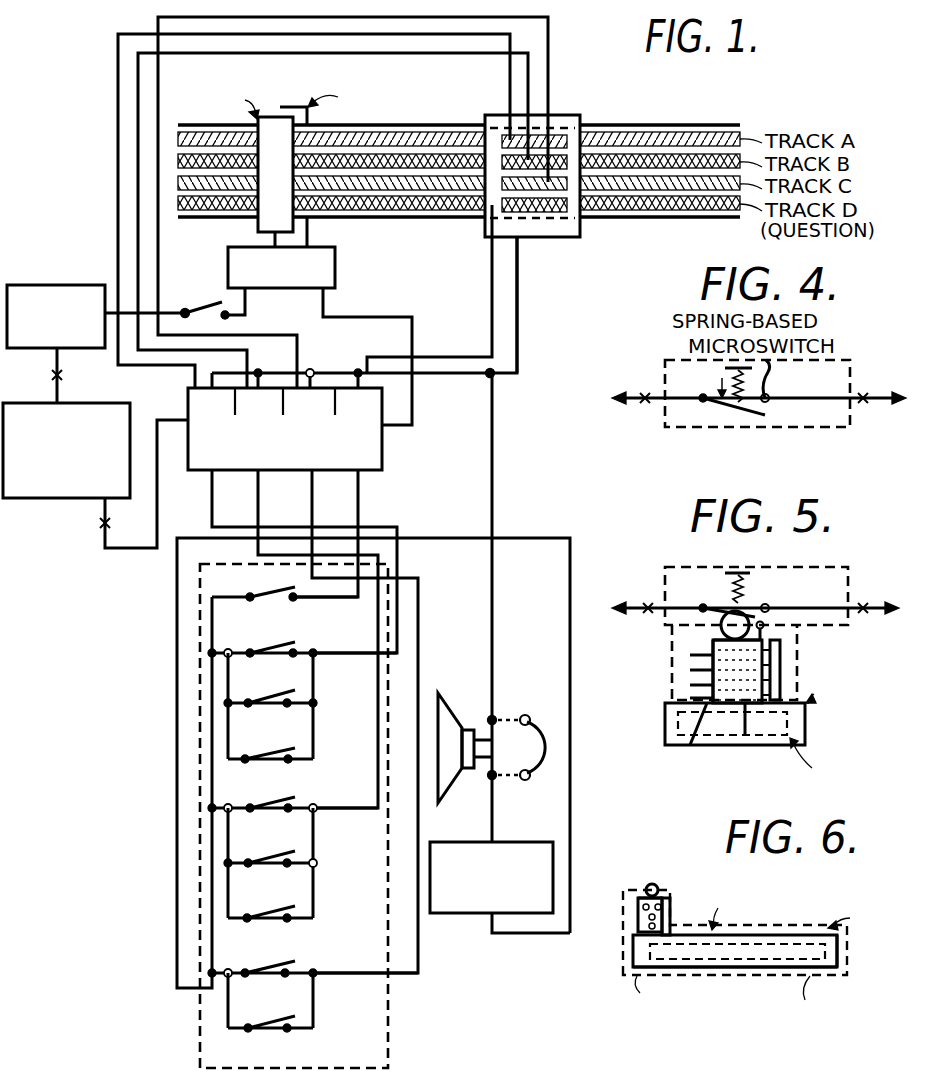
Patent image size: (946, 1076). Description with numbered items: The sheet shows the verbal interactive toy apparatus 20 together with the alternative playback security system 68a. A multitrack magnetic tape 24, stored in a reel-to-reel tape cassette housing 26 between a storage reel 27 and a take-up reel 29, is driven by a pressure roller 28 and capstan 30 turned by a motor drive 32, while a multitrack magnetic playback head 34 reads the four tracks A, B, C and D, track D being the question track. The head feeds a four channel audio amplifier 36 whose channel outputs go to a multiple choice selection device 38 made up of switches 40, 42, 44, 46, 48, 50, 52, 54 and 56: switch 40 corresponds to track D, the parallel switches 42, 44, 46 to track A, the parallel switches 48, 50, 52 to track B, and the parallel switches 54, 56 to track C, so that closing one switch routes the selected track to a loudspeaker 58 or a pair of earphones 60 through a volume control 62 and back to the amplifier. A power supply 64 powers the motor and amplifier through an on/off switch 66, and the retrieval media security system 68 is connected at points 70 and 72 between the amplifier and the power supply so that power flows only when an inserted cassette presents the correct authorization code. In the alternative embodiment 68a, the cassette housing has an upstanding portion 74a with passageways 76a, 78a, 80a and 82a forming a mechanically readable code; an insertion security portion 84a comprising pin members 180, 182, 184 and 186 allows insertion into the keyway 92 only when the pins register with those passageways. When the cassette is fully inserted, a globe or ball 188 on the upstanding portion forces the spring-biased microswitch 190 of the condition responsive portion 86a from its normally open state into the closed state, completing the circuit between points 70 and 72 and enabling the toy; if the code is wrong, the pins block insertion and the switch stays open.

In FIG. 1, the verbal interactive toy apparatus 20 is at (528, 365).
In FIG. 1, the multitrack magnetic tape 24 is at (612, 224).
In FIG. 6, the multitrack magnetic tape 24 is at (757, 934).
In FIG. 5, the reel-to-reel tape cassette housing 26 is at (818, 728).
In FIG. 6, the reel-to-reel tape cassette housing 26 is at (846, 945).
In FIG. 5, the storage reel 27 is at (745, 735).
In FIG. 6, the storage reel 27 is at (690, 976).
In FIG. 1, the pressure roller 28 is at (266, 117).
In FIG. 6, the take-up reel 29 is at (845, 960).
In FIG. 1, the capstan 30 is at (310, 113).
In FIG. 1, the motor drive 32 is at (337, 262).
In FIG. 1, the multitrack magnetic playback head 34 is at (580, 117).
In FIG. 1, the four channel audio amplifier 36 is at (384, 439).
In FIG. 1, the multiple choice selection device 38 is at (388, 993).
In FIG. 1, the switch 40 is at (303, 588).
In FIG. 1, the switch 42 is at (298, 640).
In FIG. 1, the switch 44 is at (300, 688).
In FIG. 1, the switch 46 is at (300, 746).
In FIG. 1, the switch 48 is at (296, 806).
In FIG. 1, the switch 50 is at (300, 838).
In FIG. 1, the switch 52 is at (296, 908).
In FIG. 1, the switch 54 is at (294, 965).
In FIG. 1, the switch 56 is at (300, 1010).
In FIG. 1, the loudspeaker 58 is at (453, 708).
In FIG. 1, the pair of earphones 60 is at (555, 748).
In FIG. 1, the volume control 62 is at (527, 842).
In FIG. 1, the power supply 64 is at (58, 285).
In FIG. 1, the on/off switch 66 is at (204, 283).
In FIG. 1, the playback security apparatus or retrieval media security system 68 is at (22, 499).
In FIG. 5, the playback security system 68a is at (818, 636).
In FIG. 1, the point 70 is at (62, 375).
In FIG. 4, the point 70 is at (643, 405).
In FIG. 5, the point 70 is at (648, 615).
In FIG. 1, the point 72 is at (108, 540).
In FIG. 4, the point 72 is at (865, 405).
In FIG. 5, the point 72 is at (865, 615).
In FIG. 5, the upstanding portion 74a is at (705, 643).
In FIG. 6, the upstanding portion 74a is at (640, 912).
In FIG. 5, the passageway 76a is at (822, 606).
In FIG. 6, the passageway 76a is at (640, 898).
In FIG. 5, the passageway 78a is at (742, 660).
In FIG. 6, the passageway 78a is at (668, 897).
In FIG. 5, the passageway 80a is at (780, 665).
In FIG. 6, the passageway 80a is at (655, 920).
In FIG. 5, the passageway 82a is at (705, 699).
In FIG. 6, the passageway 82a is at (640, 938).
In FIG. 5, the insertion security portion 84a is at (802, 676).
In FIG. 4, the condition responsive portion 86a is at (800, 432).
In FIG. 5, the condition responsive portion 86a is at (851, 568).
In FIG. 6, the keyway 92 is at (765, 978).
In FIG. 5, the pin member 180 is at (690, 656).
In FIG. 5, the pin member 182 is at (690, 671).
In FIG. 5, the pin member 184 is at (690, 686).
In FIG. 5, the pin member 186 is at (690, 745).
In FIG. 5, the globe or ball 188 is at (728, 607).
In FIG. 6, the globe or ball 188 is at (650, 884).
In FIG. 4, the spring-biased microswitch 190 is at (729, 418).
In FIG. 5, the spring-biased microswitch 190 is at (752, 607).